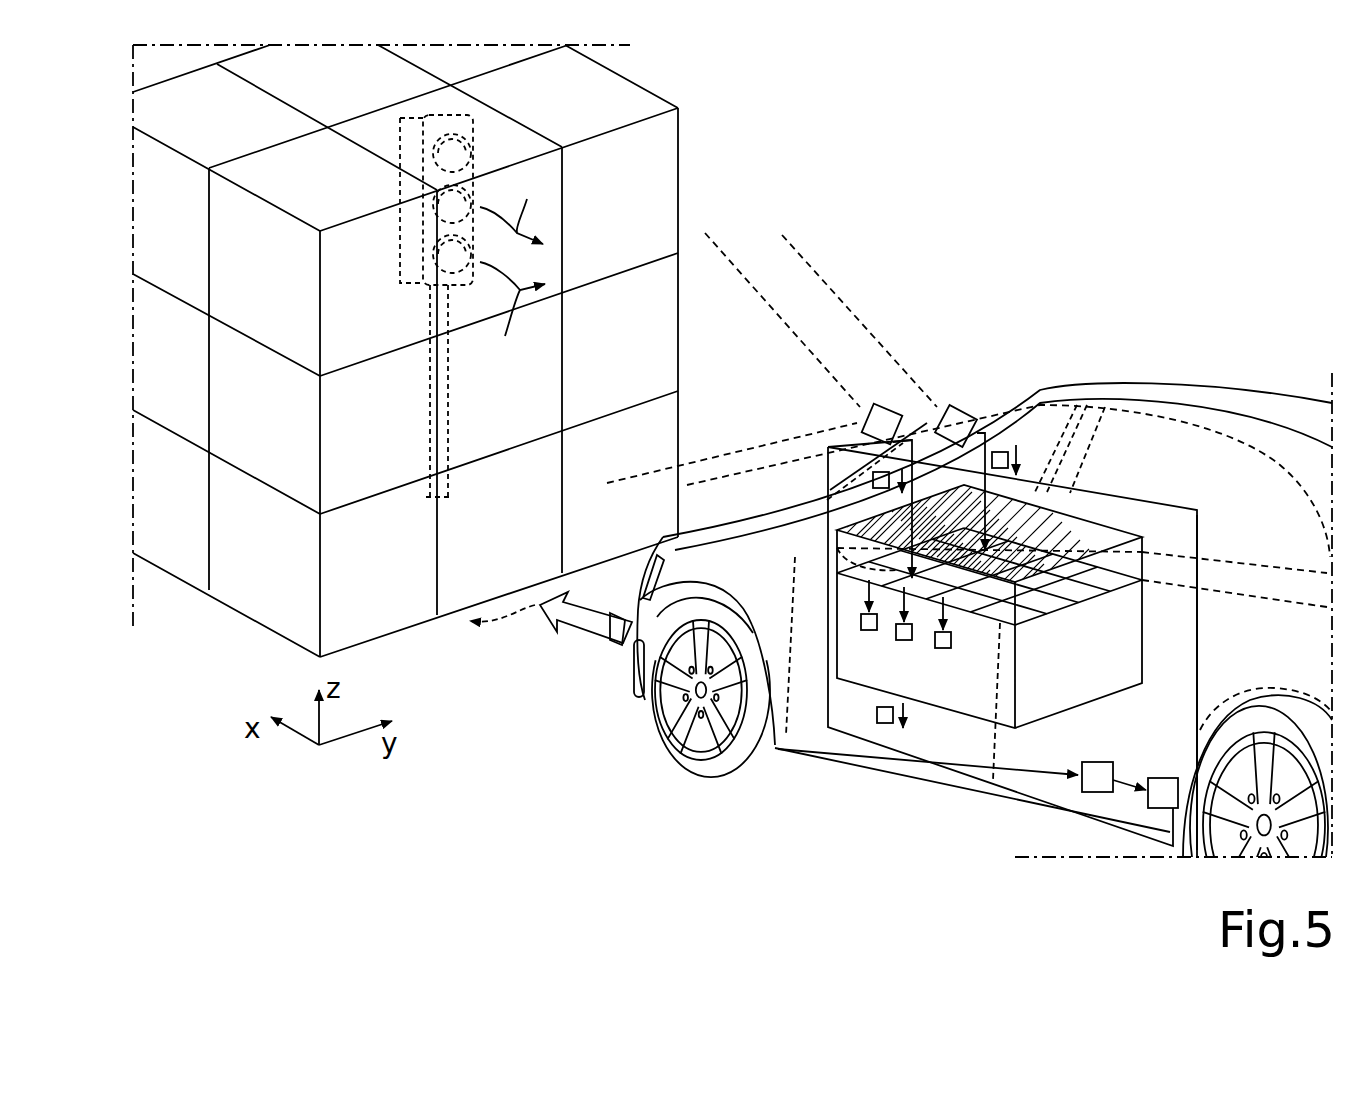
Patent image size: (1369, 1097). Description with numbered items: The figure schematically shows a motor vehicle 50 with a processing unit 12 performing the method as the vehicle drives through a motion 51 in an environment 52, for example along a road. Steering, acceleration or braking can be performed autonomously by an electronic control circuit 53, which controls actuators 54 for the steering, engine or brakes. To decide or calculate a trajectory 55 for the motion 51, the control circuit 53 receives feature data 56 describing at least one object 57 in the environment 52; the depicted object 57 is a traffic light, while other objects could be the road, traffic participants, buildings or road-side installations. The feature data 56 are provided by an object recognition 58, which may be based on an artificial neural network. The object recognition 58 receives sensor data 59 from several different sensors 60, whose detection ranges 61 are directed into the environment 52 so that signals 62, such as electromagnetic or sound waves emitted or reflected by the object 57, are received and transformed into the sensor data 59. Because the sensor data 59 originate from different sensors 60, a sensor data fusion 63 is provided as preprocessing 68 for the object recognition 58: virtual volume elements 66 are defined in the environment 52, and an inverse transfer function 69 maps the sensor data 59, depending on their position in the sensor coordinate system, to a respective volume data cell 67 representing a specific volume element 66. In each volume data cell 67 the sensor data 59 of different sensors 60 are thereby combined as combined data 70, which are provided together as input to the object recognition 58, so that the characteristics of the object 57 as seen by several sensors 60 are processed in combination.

The vehicle 50 is at (1198, 388).
The motion 51 is at (592, 633).
The environment 52 is at (462, 742).
The electronic control circuit 53 is at (1097, 793).
The actuators 54 is at (1163, 778).
The trajectory 55 is at (495, 628).
The feature data 56 is at (885, 724).
The object 57 is at (475, 127).
The object recognition 58 is at (1143, 645).
The apparatus 12 is at (1204, 640).
The sensor data 59 is at (1000, 452).
The sensors 60 is at (893, 400).
The detection ranges 61 is at (825, 285).
The signals 62 is at (514, 267).
The sensor data fusion 63 is at (1143, 553).
The preprocessing 68 is at (1210, 548).
The volume elements 66 is at (638, 191).
The volume data cell 67 is at (865, 574).
The inverse transfer function 69 is at (1043, 490).
The combined data 70 is at (861, 622).